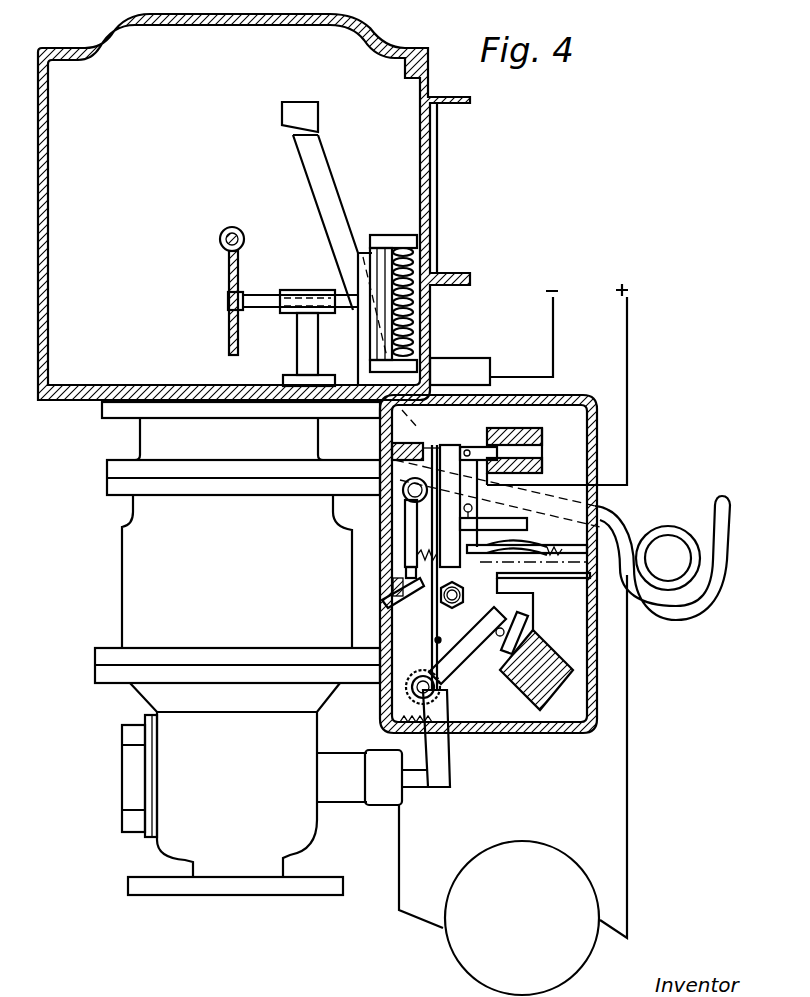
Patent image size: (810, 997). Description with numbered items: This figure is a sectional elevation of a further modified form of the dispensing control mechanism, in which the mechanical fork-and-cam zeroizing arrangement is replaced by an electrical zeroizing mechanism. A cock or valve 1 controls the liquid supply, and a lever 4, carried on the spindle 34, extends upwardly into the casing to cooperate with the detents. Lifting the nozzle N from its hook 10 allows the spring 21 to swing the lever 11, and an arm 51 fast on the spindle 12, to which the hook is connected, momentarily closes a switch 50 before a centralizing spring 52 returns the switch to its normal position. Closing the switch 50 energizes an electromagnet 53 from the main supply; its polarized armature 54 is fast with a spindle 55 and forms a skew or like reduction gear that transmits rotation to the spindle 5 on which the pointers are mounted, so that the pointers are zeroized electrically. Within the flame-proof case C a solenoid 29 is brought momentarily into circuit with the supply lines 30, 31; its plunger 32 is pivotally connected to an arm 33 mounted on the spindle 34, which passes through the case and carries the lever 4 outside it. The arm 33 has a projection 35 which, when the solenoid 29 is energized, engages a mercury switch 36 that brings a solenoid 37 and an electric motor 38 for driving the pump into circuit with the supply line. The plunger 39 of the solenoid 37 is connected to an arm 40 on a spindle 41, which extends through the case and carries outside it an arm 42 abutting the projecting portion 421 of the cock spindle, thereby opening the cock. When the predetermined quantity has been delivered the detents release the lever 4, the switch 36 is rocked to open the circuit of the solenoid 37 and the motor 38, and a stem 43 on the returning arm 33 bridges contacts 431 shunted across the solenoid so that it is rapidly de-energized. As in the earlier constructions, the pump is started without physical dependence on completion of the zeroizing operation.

The cock or valve 1 is at (261, 648).
The lever 4 is at (340, 244).
The spindle 5 is at (247, 234).
The hook 10 is at (703, 553).
The lever 11 is at (592, 493).
The spindle 12 is at (402, 497).
The spring 21 is at (566, 574).
The solenoid 29 is at (542, 434).
The supply line 30 is at (627, 330).
The supply line 31 is at (553, 330).
The plunger 32 is at (480, 445).
The arm 33 is at (462, 441).
The spindle 34 is at (453, 609).
The projection 35 is at (483, 520).
The mercury switch 36 is at (520, 540).
The solenoid 37 is at (556, 655).
The electric motor 38 is at (499, 900).
The plunger 39 is at (506, 631).
The arm 40 is at (460, 643).
The spindle 41 is at (440, 690).
The arm 42 is at (437, 757).
The projecting portion of the cock spindle 421 is at (426, 787).
The stem 43 is at (434, 441).
The contacts 431 is at (393, 473).
The switch 50 is at (393, 630).
The arm 51 is at (405, 558).
The centralizing spring 52 is at (420, 648).
The electromagnet 53 is at (414, 341).
The polarized armature 54 is at (380, 335).
The spindle 55 is at (271, 294).
The flame-proof case C is at (592, 638).
The nozzle N is at (672, 530).